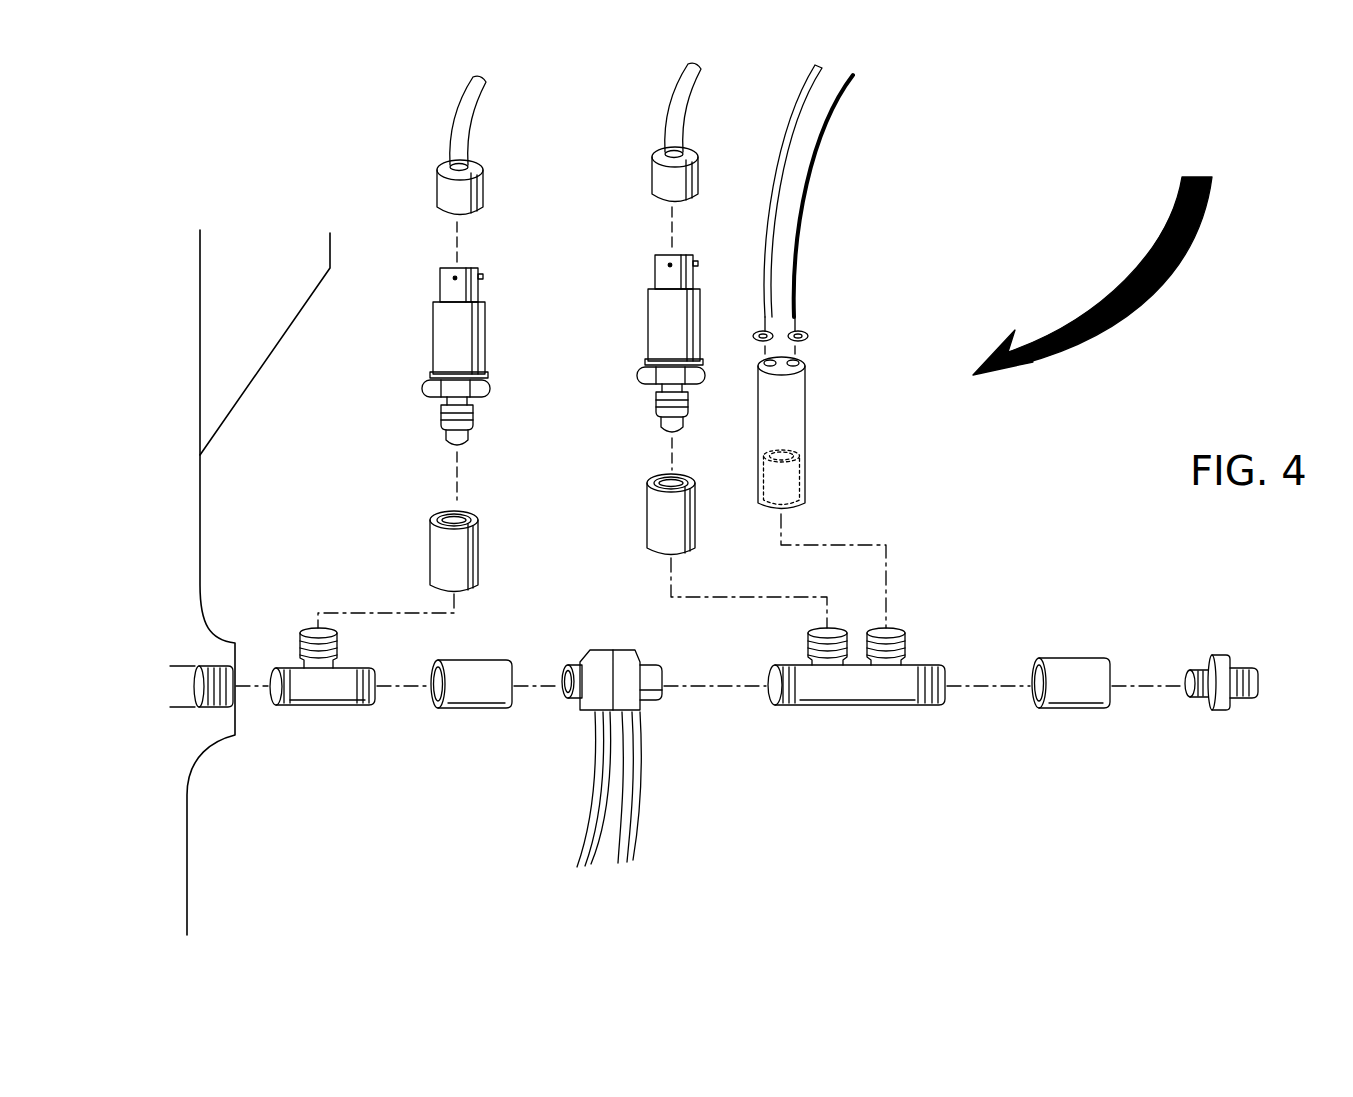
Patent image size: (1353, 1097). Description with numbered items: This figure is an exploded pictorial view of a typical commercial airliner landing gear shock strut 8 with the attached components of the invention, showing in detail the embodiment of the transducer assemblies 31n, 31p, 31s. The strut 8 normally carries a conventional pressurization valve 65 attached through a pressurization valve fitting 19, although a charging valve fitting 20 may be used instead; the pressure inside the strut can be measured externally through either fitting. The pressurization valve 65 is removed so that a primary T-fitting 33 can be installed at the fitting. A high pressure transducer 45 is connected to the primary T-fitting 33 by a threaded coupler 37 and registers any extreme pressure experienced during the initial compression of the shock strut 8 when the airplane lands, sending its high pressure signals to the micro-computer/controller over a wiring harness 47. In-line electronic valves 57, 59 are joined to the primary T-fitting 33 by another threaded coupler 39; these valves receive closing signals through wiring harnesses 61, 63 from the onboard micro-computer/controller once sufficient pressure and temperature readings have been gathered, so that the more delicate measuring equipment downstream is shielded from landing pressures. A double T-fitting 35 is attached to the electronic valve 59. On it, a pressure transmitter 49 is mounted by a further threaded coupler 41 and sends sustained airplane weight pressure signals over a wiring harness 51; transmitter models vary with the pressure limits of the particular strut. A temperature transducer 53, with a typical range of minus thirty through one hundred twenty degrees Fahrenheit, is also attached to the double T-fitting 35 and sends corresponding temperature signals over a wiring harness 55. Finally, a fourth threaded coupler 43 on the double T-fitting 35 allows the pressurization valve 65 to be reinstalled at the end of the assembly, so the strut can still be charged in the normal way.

The oleo-type shock strut 8 is at (177, 500).
The pressurization valve fitting 19 is at (248, 733).
The charging valve fitting 20 is at (240, 692).
The transducer assembly 31n is at (1108, 219).
The transducer assembly 31p is at (1108, 219).
The transducer assembly 31s is at (1108, 219).
The primary T-fitting 33 is at (323, 708).
The double T-fitting 35 is at (830, 705).
The threaded coupler 37 is at (480, 551).
The threaded coupler 39 is at (463, 710).
The threaded coupler 41 is at (648, 520).
The fourth threaded coupler 43 is at (1091, 708).
The high pressure transducer 45 is at (433, 335).
The wiring harness 47 is at (483, 207).
The pressure transmitter 49 is at (647, 345).
The wiring harness 51 is at (667, 110).
The temperature transducer 53 is at (806, 481).
The wiring harness 55 is at (770, 222).
The in-line electronic valve 57 is at (590, 652).
The in-line electronic valve 59 is at (623, 650).
The wiring harness 61 is at (582, 870).
The wiring harness 63 is at (623, 870).
The pressurization valve 65 is at (1258, 679).